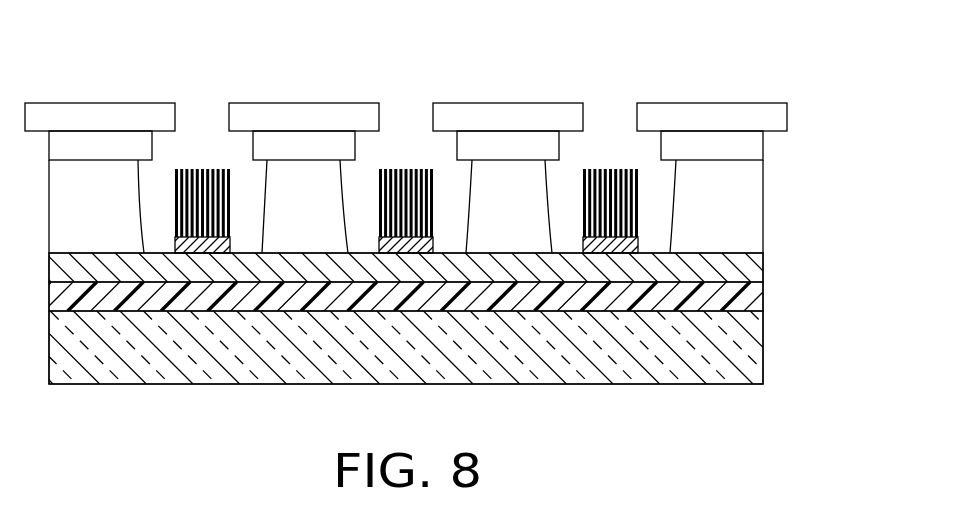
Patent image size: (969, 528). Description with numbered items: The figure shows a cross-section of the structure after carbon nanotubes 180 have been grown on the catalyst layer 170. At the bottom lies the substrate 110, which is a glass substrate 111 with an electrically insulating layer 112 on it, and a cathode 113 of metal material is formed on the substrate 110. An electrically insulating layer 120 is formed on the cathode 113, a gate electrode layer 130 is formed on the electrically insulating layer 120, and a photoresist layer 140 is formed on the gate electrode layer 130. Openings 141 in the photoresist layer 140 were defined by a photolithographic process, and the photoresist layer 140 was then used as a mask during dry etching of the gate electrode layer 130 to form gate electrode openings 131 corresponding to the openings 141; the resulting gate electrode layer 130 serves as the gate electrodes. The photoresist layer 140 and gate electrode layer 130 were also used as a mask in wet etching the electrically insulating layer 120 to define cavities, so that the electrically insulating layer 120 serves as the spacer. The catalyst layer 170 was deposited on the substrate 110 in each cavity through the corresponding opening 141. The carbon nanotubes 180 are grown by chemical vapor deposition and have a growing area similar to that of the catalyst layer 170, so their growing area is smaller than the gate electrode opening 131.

The substrate 110 is at (833, 253).
The glass substrate 111 is at (750, 350).
The electrically insulating layer 112 is at (755, 298).
The cathode 113 is at (753, 270).
The electrically insulating layer 120 is at (742, 212).
The gate electrode layer 130 is at (750, 148).
The gate electrode opening 131 is at (408, 158).
The photoresist layer 140 is at (777, 116).
The opening 141 is at (198, 112).
The catalyst layer 170 is at (637, 248).
The carbon nanotubes 180 is at (610, 170).